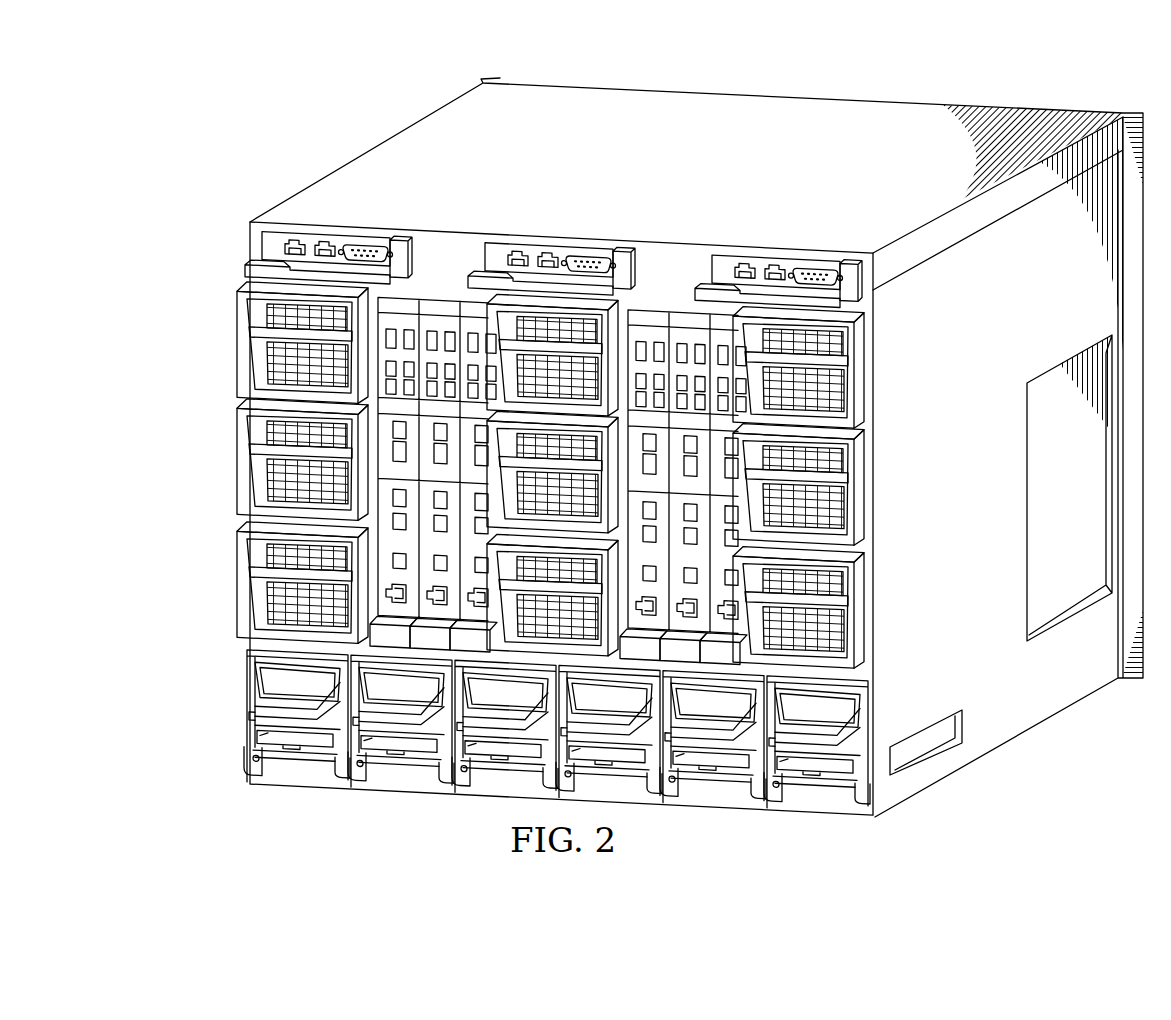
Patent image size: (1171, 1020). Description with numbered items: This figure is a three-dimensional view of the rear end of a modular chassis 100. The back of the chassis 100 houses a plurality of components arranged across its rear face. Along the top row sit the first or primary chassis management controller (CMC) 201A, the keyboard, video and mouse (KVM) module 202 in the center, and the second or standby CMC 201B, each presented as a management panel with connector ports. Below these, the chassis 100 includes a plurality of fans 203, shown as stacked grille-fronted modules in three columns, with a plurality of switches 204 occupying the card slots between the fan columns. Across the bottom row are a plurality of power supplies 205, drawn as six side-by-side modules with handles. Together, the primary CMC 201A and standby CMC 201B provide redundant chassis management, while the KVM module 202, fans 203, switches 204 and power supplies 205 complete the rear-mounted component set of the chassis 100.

The chassis 100 is at (1041, 710).
The primary chassis management controller 201A is at (279, 243).
The standby chassis management controller 201B is at (790, 265).
The keyboard, video and mouse module 202 is at (562, 247).
The fans 203 is at (248, 343).
The switches 204 is at (441, 324).
The power supplies 205 is at (262, 706).